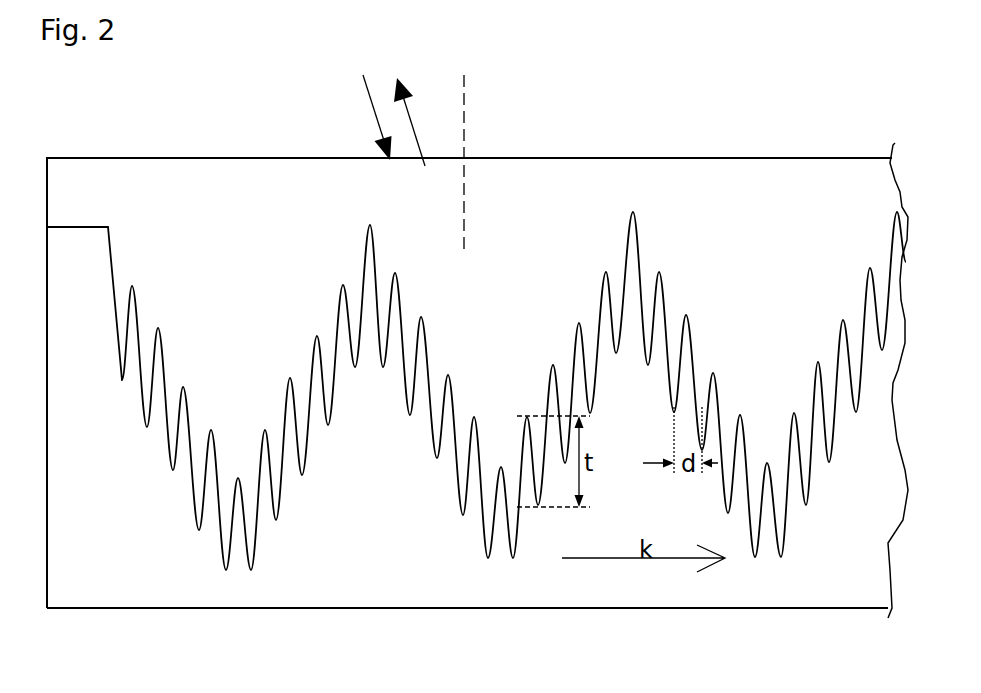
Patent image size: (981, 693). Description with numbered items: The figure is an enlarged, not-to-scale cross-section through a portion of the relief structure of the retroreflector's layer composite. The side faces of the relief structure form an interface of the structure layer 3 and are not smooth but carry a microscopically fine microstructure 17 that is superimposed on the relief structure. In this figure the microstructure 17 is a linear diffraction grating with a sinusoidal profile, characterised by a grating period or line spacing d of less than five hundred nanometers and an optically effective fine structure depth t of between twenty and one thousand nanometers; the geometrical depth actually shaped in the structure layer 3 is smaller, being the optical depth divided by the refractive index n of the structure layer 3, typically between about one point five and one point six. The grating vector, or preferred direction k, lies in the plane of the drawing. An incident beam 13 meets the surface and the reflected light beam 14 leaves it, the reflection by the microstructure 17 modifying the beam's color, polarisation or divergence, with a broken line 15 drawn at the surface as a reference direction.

The structure layer 3 is at (187, 213).
The incident beam 13 is at (375, 112).
The reflected light beam 14 is at (414, 132).
The surface normal 15 is at (466, 125).
The microstructure 17 is at (305, 455).